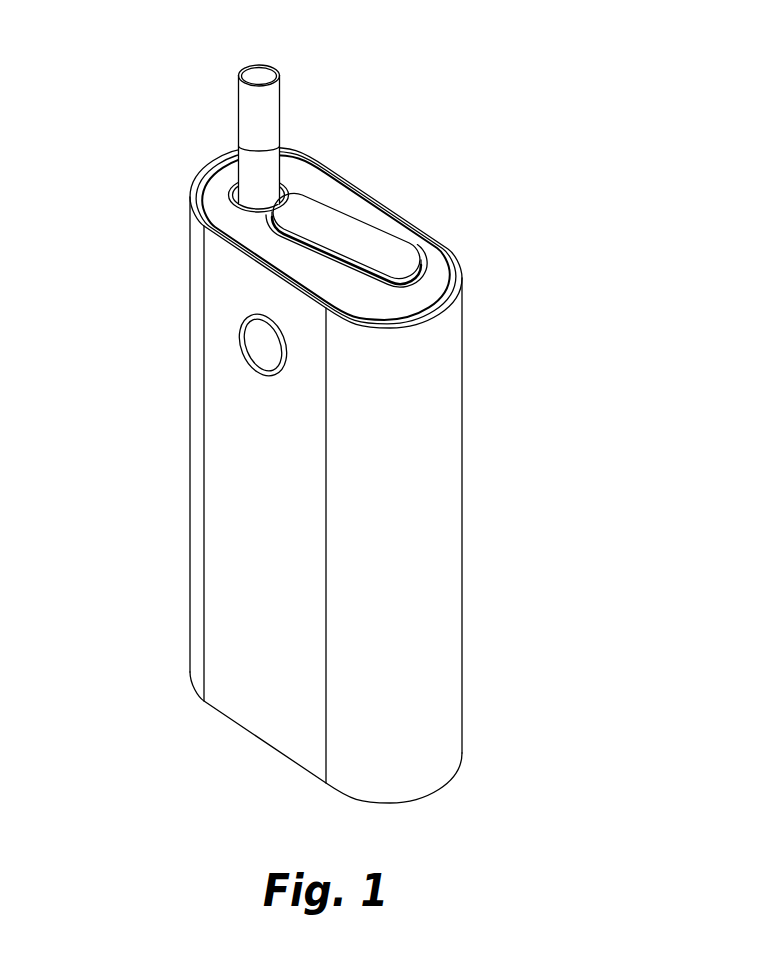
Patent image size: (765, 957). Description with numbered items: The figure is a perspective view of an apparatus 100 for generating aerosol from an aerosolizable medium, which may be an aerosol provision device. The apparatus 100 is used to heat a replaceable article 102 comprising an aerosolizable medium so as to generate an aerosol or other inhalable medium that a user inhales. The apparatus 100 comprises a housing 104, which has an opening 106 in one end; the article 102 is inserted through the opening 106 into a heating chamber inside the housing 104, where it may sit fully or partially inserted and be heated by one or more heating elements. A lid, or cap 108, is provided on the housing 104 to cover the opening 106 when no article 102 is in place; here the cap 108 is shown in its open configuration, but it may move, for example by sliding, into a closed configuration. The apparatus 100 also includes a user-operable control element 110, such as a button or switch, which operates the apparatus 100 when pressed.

The apparatus 100 is at (383, 104).
The article 102 is at (247, 117).
The housing 104 is at (255, 693).
The opening 106 is at (237, 178).
The cap 108 is at (350, 222).
The user-operable control element 110 is at (257, 335).